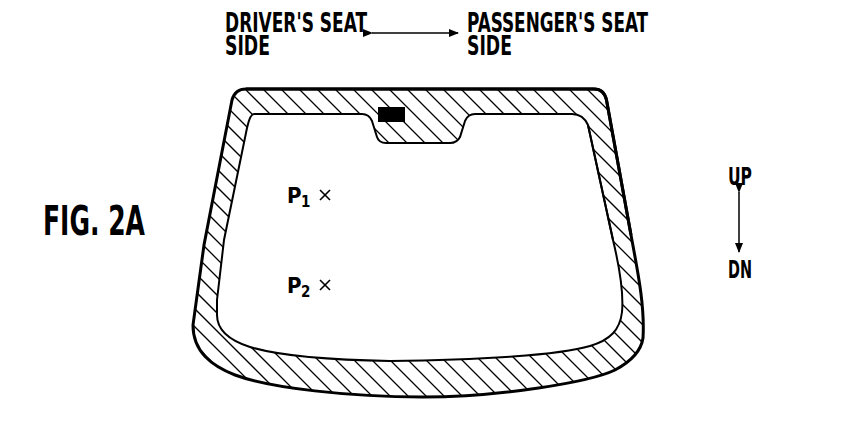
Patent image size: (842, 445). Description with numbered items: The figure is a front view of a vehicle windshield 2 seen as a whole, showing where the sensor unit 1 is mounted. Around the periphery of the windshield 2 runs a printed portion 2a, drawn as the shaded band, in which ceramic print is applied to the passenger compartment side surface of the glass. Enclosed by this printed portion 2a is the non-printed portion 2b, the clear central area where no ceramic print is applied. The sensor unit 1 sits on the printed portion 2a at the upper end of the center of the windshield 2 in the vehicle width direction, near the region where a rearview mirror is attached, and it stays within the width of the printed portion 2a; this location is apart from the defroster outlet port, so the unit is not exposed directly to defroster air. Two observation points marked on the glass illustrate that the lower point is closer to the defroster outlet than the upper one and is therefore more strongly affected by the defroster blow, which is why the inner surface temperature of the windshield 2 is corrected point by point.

The sensor unit 1 is at (407, 115).
The windshield 2 is at (643, 321).
The printed portion 2a is at (606, 103).
The non-printed portion 2b is at (588, 178).